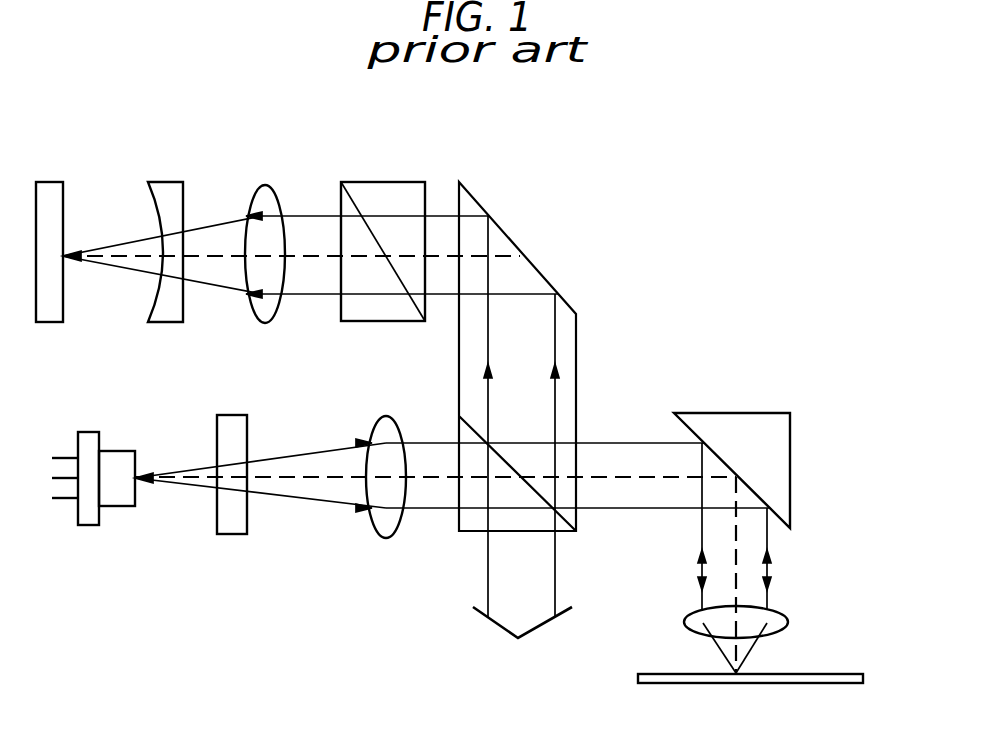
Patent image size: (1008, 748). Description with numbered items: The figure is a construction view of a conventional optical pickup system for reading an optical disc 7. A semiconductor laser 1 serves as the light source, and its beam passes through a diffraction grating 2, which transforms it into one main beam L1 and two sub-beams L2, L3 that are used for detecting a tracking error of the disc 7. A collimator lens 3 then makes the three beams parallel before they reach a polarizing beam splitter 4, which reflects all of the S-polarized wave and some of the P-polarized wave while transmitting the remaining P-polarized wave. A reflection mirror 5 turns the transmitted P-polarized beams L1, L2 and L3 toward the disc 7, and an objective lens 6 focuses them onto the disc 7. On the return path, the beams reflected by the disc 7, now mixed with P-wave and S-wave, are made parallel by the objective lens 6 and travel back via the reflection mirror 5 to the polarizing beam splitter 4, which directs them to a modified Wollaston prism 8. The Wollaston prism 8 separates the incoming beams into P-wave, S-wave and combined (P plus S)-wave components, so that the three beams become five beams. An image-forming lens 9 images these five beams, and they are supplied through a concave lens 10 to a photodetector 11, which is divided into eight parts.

The semiconductor laser 1 is at (90, 517).
The diffraction grating 2 is at (228, 517).
The collimator lens 3 is at (385, 513).
The polarizing beam splitter 4 is at (507, 248).
The reflection mirror 5 is at (790, 445).
The objective lens 6 is at (784, 623).
The optical disc 7 is at (849, 684).
The modified Wollaston prism 8 is at (389, 198).
The image-forming lens 9 is at (266, 197).
The concave lens 10 is at (171, 197).
The photodetector 11 is at (49, 197).
The main beam L1 is at (298, 478).
The sub-beam L2 is at (330, 450).
The sub-beam L3 is at (299, 506).